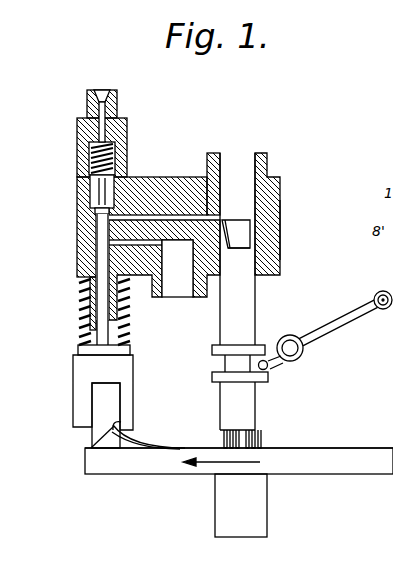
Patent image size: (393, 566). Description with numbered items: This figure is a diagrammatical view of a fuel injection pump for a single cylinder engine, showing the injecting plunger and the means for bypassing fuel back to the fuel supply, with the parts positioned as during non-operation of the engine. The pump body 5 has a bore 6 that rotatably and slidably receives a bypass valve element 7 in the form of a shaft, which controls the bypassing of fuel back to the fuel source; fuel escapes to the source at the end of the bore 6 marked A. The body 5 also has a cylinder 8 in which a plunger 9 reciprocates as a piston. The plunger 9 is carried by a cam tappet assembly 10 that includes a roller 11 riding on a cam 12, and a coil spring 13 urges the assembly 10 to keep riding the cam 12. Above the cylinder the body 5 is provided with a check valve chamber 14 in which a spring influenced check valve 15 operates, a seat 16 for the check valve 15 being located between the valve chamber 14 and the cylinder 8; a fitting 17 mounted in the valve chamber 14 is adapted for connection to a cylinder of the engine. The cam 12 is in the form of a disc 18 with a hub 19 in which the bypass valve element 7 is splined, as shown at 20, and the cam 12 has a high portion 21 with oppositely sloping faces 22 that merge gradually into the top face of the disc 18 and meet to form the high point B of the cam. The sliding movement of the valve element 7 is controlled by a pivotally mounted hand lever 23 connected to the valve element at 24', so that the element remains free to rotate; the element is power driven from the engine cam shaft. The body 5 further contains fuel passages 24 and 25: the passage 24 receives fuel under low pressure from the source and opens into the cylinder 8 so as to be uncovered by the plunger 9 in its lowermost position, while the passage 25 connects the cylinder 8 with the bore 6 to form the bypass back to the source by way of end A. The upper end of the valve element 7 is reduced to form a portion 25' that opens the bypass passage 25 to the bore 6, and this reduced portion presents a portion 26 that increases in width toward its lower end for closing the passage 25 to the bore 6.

The pump body 5 is at (282, 229).
The bore 6 is at (252, 162).
The bypass valve element 7 is at (245, 300).
The cylinder 8 is at (102, 224).
The plunger 9 is at (98, 260).
The cam tappet assembly 10 is at (133, 385).
The roller 11 is at (105, 404).
The cam 12 is at (309, 446).
The coil spring 13 is at (131, 326).
The check valve chamber 14 is at (127, 148).
The check valve 15 is at (93, 193).
The seat 16 is at (94, 212).
The fitting 17 is at (118, 114).
The disc 18 is at (314, 468).
The hub 19 is at (268, 515).
The spline connection 20 is at (258, 438).
The high portion 21 is at (132, 448).
The sloping faces 22 is at (162, 448).
The hand lever 23 is at (337, 320).
The fuel passage 24 is at (177, 268).
The connection of hand lever to valve element 24' is at (252, 349).
The fuel passage 25 is at (164, 237).
The reduced portion 25' is at (239, 260).
The widening portion 26 is at (228, 224).
The end of bore A is at (222, 139).
The high point of cam B is at (134, 426).